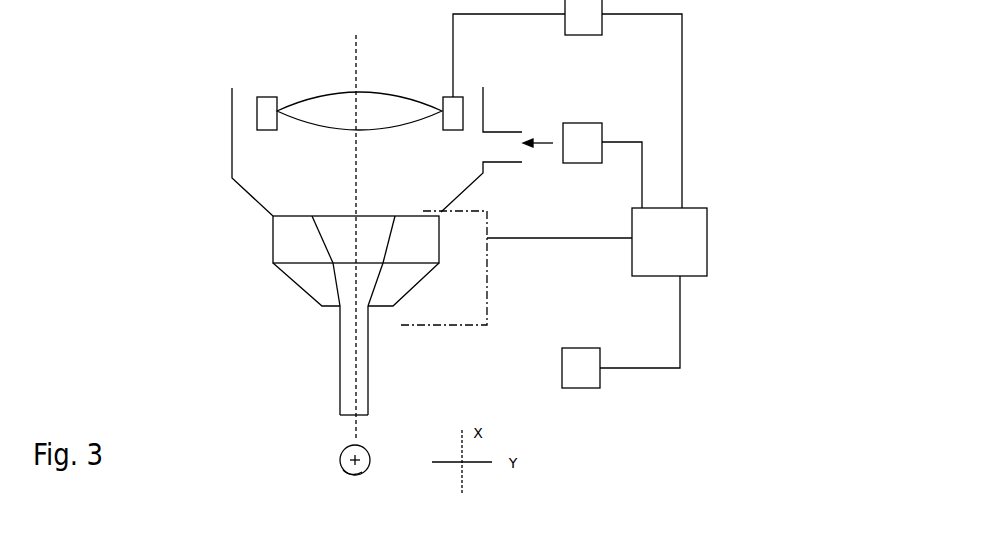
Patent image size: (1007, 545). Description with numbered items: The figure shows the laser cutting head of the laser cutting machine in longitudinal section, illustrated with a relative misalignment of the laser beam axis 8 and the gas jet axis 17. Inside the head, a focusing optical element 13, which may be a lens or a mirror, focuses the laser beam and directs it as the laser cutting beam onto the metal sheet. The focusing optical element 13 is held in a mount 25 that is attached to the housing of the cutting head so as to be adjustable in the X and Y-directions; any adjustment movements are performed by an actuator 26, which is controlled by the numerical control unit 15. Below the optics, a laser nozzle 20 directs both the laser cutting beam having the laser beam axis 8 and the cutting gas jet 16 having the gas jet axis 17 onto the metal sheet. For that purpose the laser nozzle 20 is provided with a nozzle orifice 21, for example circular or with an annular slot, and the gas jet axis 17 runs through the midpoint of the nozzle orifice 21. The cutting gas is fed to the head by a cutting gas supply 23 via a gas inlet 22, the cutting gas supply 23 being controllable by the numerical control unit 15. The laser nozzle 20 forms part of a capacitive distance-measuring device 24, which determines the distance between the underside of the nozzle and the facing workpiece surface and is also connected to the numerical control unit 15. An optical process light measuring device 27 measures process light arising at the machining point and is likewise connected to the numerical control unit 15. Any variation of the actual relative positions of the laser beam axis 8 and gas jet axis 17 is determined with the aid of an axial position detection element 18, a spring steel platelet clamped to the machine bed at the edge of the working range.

The laser beam axis 8 is at (346, 448).
The focusing optical element 13 is at (372, 118).
The numerical control unit 15 is at (662, 250).
The cutting gas jet 16 is at (340, 343).
The gas jet axis 17 is at (353, 459).
The axial position detection element 18 is at (345, 478).
The laser nozzle 20 is at (248, 262).
The nozzle orifice 21 is at (338, 308).
The gas inlet 22 is at (494, 153).
The cutting gas supply 23 is at (575, 151).
The capacitive distance-measuring device 24 is at (450, 310).
The mount 25 is at (272, 111).
The actuator 26 is at (575, 25).
The optical process light measuring device 27 is at (573, 376).